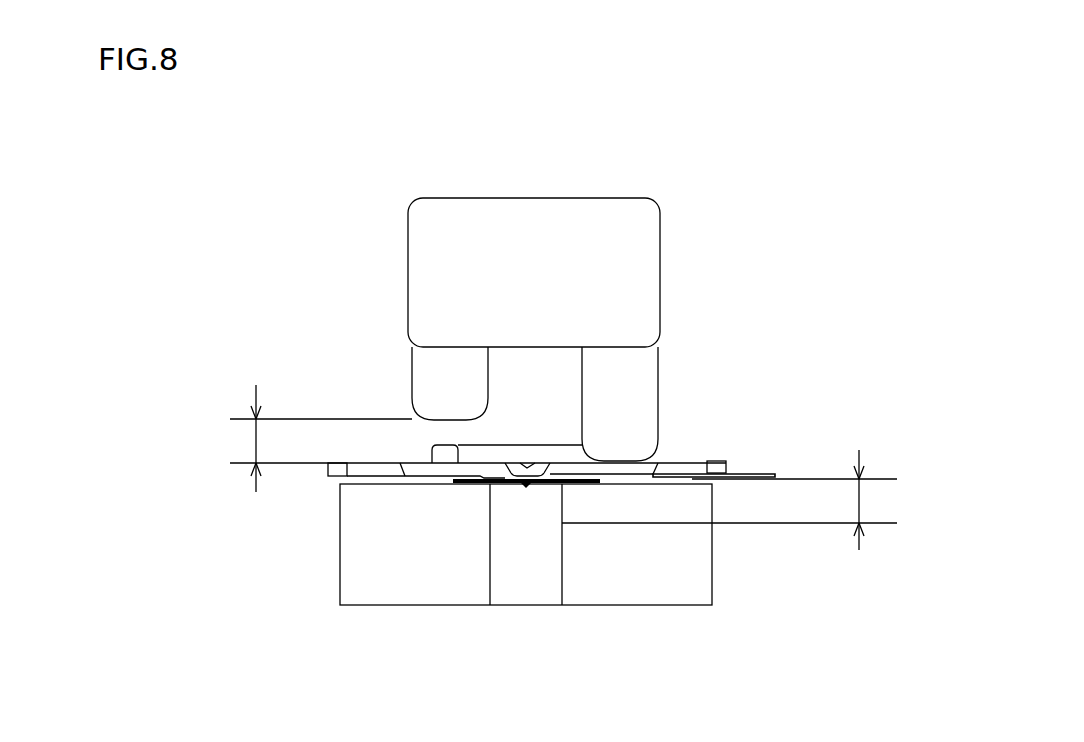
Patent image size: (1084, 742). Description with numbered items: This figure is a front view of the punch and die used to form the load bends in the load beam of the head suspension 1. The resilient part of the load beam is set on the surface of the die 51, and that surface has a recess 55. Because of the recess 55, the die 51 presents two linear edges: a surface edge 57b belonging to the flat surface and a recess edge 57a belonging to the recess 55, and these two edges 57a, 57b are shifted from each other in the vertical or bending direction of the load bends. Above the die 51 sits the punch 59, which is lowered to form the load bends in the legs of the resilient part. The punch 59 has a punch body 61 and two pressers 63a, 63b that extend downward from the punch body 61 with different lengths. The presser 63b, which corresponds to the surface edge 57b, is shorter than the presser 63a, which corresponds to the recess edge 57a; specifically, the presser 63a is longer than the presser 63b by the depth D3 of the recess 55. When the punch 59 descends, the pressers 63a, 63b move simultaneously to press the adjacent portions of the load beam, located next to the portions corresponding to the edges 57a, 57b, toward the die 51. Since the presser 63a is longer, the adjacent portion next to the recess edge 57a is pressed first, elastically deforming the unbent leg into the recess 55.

The punch 59 is at (535, 294).
The punch body 61 is at (650, 268).
The presser 63a is at (645, 372).
The presser 63b is at (428, 379).
The head suspension 1 is at (517, 515).
The recess edge 57a is at (678, 523).
The surface edge 57b is at (344, 482).
The die 51 is at (526, 595).
The recess 55 is at (601, 508).
The depth of the recess D3 is at (798, 500).